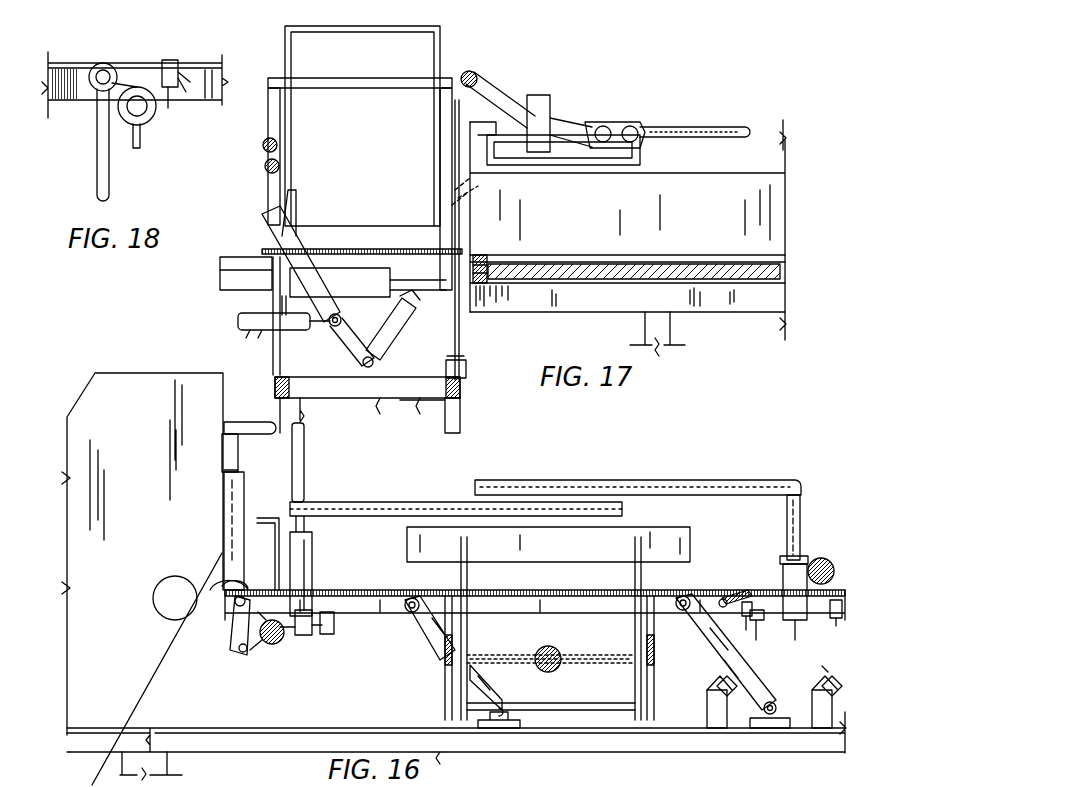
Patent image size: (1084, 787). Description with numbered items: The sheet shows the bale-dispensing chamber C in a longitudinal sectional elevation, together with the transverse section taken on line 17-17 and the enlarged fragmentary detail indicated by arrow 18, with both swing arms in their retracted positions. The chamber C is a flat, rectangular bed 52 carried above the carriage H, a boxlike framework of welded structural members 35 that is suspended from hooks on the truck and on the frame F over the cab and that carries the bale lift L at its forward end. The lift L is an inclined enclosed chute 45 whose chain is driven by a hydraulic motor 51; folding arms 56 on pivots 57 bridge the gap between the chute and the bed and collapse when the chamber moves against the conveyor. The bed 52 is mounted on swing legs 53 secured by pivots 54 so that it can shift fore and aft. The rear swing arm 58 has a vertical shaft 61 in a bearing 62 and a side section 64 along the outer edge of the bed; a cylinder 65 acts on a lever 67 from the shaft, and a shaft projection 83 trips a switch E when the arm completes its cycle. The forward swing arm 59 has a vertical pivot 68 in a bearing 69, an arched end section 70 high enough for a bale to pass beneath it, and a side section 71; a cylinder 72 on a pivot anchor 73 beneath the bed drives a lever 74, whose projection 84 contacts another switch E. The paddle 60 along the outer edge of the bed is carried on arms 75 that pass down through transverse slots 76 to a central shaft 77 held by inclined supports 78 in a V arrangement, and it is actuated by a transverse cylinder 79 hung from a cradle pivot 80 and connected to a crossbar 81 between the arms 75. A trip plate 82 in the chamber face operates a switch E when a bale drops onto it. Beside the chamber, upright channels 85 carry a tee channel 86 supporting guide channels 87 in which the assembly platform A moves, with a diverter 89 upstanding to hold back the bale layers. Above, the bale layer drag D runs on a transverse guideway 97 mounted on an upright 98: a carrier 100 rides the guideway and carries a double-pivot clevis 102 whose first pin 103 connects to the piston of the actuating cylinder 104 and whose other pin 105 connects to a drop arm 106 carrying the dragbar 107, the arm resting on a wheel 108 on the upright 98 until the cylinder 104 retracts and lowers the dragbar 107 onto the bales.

In FIG. 16, the section line 17- 17 is at (569, 770).
In FIG. 16, the view arrow 18 is at (307, 664).
In FIG. 17, the structural members 35 is at (468, 384).
In FIG. 16, the structural members 35 is at (326, 728).
In FIG. 17, the chute 45 is at (440, 70).
In FIG. 16, the chute 45 is at (92, 384).
In FIG. 17, the hydraulic motor 51 is at (234, 256).
In FIG. 16, the hydraulic motor 51 is at (166, 580).
In FIG. 18, the bed 52 is at (207, 97).
In FIG. 17, the bed 52 is at (474, 254).
In FIG. 16, the bed 52 is at (840, 594).
In FIG. 17, the swing legs 53 is at (276, 340).
In FIG. 16, the swing legs 53 is at (440, 648).
In FIG. 17, the pivots 54 is at (468, 364).
In FIG. 16, the pivots 54 is at (408, 620).
In FIG. 16, the folding arms 56 is at (228, 650).
In FIG. 16, the pivots 57 is at (234, 608).
In FIG. 16, the rear swing arm 58 is at (770, 474).
In FIG. 17, the forward swing arm 59 is at (362, 251).
In FIG. 16, the forward swing arm 59 is at (396, 488).
In FIG. 17, the paddle 60 is at (290, 215).
In FIG. 16, the paddle 60 is at (704, 538).
In FIG. 16, the vertical shaft portion 61 is at (802, 556).
In FIG. 16, the bearing 62 is at (781, 574).
In FIG. 16, the side section 64 is at (644, 480).
In FIG. 16, the cylinder 65 is at (826, 560).
In FIG. 16, the lever 67 is at (786, 556).
In FIG. 17, the vertical pivot 68 is at (446, 144).
In FIG. 16, the vertical pivot 68 is at (288, 510).
In FIG. 17, the bearing 69 is at (444, 196).
In FIG. 16, the bearing 69 is at (310, 556).
In FIG. 17, the arched end section 70 is at (429, 80).
In FIG. 16, the arched end section 70 is at (302, 466).
In FIG. 17, the side section 71 is at (262, 168).
In FIG. 16, the side section 71 is at (432, 502).
In FIG. 18, the cylinder 72 is at (110, 185).
In FIG. 17, the cylinder 72 is at (370, 270).
In FIG. 16, the cylinder 72 is at (272, 648).
In FIG. 17, the pivot anchor 73 is at (282, 308).
In FIG. 18, the lever 74 is at (122, 86).
In FIG. 16, the lever 74 is at (302, 636).
In FIG. 17, the arms 75 is at (346, 334).
In FIG. 16, the arms 75 is at (468, 590).
In FIG. 16, the transverse slots 76 is at (450, 594).
In FIG. 17, the shaft 77 is at (376, 360).
In FIG. 16, the shaft 77 is at (604, 704).
In FIG. 17, the inclined supports 78 is at (396, 326).
In FIG. 16, the inclined supports 78 is at (443, 690).
In FIG. 17, the cylinder 79 is at (234, 320).
In FIG. 16, the cylinder 79 is at (538, 648).
In FIG. 17, the cradle pivot 80 is at (270, 345).
In FIG. 17, the crossbar 81 is at (342, 316).
In FIG. 16, the crossbar 81 is at (606, 656).
In FIG. 16, the trip plate 82 is at (748, 590).
In FIG. 16, the shaft projection 83 is at (784, 624).
In FIG. 18, the projection 84 is at (142, 142).
In FIG. 17, the upright channels 85 is at (668, 345).
In FIG. 17, the tee channel 86 is at (628, 308).
In FIG. 17, the guide channels 87 is at (478, 260).
In FIG. 17, the diverter 89 is at (780, 238).
In FIG. 16, the diverter 89 is at (272, 576).
In FIG. 17, the transverse guideway 97 is at (782, 152).
In FIG. 17, the upright 98 is at (478, 164).
In FIG. 16, the upright 98 is at (228, 536).
In FIG. 17, the carrier 100 is at (566, 160).
In FIG. 17, the double-pivot clevis 102 is at (628, 126).
In FIG. 17, the first pin 103 is at (638, 126).
In FIG. 17, the actuating cylinder 104 is at (724, 130).
In FIG. 17, the clevis pin 105 is at (601, 125).
In FIG. 17, the drop arm 106 is at (526, 96).
In FIG. 16, the drop arm 106 is at (220, 440).
In FIG. 17, the dragbar 107 is at (476, 82).
In FIG. 16, the dragbar 107 is at (234, 422).
In FIG. 17, the wheel 108 is at (504, 124).
In FIG. 16, the wheel 108 is at (224, 470).
In FIG. 17, the assembly platform A is at (714, 252).
In FIG. 16, the bale-dispensing chamber C is at (450, 480).
In FIG. 17, the bale layer drag D is at (504, 86).
In FIG. 16, the bale layer drag D is at (216, 459).
In FIG. 18, the electrical switch E is at (171, 60).
In FIG. 17, the electrical switch E is at (298, 285).
In FIG. 16, the electrical switch E is at (336, 628).
In FIG. 17, the frame F is at (704, 322).
In FIG. 17, the carriage H is at (460, 410).
In FIG. 16, the carriage H is at (286, 758).
In FIG. 16, the bale lift conveyor L is at (86, 546).